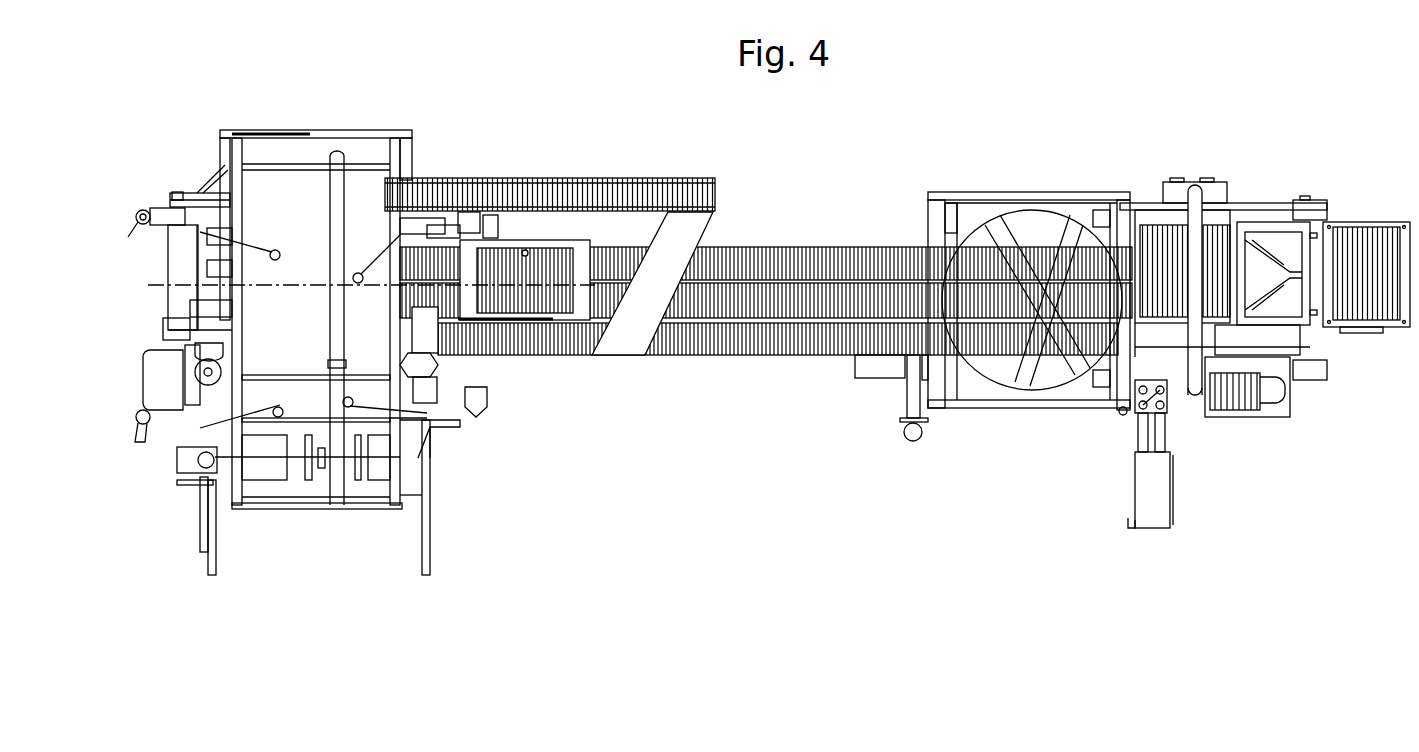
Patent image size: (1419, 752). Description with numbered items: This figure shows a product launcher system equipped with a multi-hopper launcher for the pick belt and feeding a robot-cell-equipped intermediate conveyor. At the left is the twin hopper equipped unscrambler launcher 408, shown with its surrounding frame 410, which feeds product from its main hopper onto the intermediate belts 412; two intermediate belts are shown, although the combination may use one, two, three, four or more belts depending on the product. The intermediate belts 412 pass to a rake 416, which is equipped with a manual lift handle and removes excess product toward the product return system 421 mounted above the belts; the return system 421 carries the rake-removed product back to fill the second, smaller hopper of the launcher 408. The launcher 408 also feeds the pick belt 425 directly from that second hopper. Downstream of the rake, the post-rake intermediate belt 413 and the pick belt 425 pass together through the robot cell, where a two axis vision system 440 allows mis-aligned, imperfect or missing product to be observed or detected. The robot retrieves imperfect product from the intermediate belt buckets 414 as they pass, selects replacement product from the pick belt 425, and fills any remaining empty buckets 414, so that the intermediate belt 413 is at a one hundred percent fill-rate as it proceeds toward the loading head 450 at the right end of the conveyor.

The twin hopper equipped unscrambler launcher 408 is at (300, 130).
The frame 410 is at (430, 150).
The intermediate belt(s) 412 is at (598, 357).
The intermediate belt 413 is at (884, 245).
The intermediate belt buckets 414 is at (818, 247).
The rake 416 is at (707, 232).
The product return system 421 is at (647, 178).
The pick belt 425 is at (745, 357).
The two axis vision system 440 is at (857, 380).
The loading head 450 is at (1364, 218).